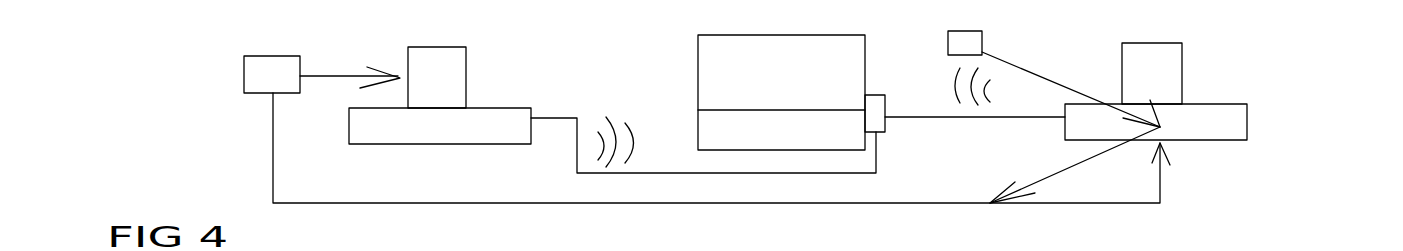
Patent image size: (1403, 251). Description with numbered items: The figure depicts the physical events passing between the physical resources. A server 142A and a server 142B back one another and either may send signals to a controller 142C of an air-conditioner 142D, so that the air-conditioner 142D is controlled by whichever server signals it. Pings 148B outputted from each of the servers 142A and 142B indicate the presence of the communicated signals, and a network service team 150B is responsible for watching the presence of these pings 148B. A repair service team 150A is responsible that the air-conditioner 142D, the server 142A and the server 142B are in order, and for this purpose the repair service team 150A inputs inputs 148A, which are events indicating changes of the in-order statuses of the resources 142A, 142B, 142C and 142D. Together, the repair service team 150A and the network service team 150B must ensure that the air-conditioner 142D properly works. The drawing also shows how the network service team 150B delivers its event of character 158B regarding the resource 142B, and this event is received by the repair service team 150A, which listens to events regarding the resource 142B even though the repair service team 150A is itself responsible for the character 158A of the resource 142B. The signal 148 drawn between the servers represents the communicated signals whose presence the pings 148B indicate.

The server 142A is at (435, 80).
The server 142B is at (1217, 125).
The controller 142C is at (873, 108).
The air-conditioner 142D is at (768, 97).
The acoustic signal 148 is at (988, 88).
The inputs 148A is at (340, 78).
The pings 148B is at (620, 122).
The repair service team 150A is at (264, 74).
The network service team 150B is at (962, 43).
The character 158A is at (1127, 170).
The character 158B is at (1090, 93).